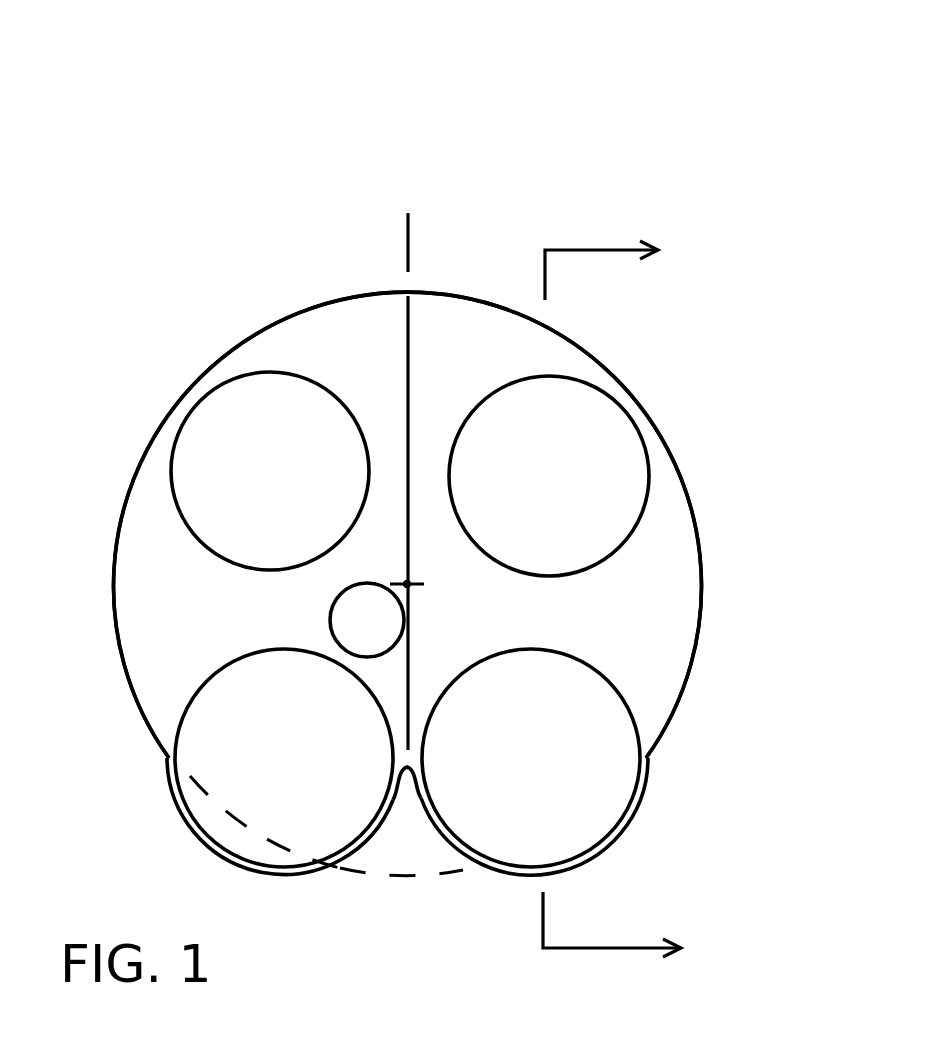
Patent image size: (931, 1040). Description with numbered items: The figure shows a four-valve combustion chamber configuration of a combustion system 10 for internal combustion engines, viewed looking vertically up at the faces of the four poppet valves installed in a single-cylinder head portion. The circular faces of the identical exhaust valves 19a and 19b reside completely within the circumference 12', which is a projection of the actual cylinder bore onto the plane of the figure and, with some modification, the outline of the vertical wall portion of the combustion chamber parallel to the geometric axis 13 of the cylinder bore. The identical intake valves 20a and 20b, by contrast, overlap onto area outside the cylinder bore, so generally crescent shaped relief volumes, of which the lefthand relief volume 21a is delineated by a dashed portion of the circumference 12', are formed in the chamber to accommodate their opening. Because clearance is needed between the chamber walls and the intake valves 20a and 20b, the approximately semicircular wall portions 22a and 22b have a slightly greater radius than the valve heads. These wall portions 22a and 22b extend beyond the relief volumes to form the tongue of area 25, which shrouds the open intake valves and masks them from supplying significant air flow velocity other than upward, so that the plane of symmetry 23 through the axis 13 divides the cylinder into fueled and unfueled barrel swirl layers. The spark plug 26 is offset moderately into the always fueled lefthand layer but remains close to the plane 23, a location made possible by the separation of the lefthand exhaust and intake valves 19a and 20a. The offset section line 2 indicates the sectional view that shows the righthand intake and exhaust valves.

The combustion system 10 is at (472, 183).
The circumference 12' is at (408, 525).
The geometric axis 13 is at (412, 586).
The exhaust valve 19a is at (292, 489).
The exhaust valve 19b is at (577, 493).
The intake valve 20a is at (317, 762).
The intake valve 20b is at (573, 765).
The relief volume 21a is at (232, 830).
The wall portion 22a is at (263, 866).
The wall portion 22b is at (602, 852).
The plane of symmetry 23 is at (408, 258).
The tongue of area 25 is at (428, 856).
The spark plug 26 is at (331, 617).
The sectional view 2 is at (633, 604).